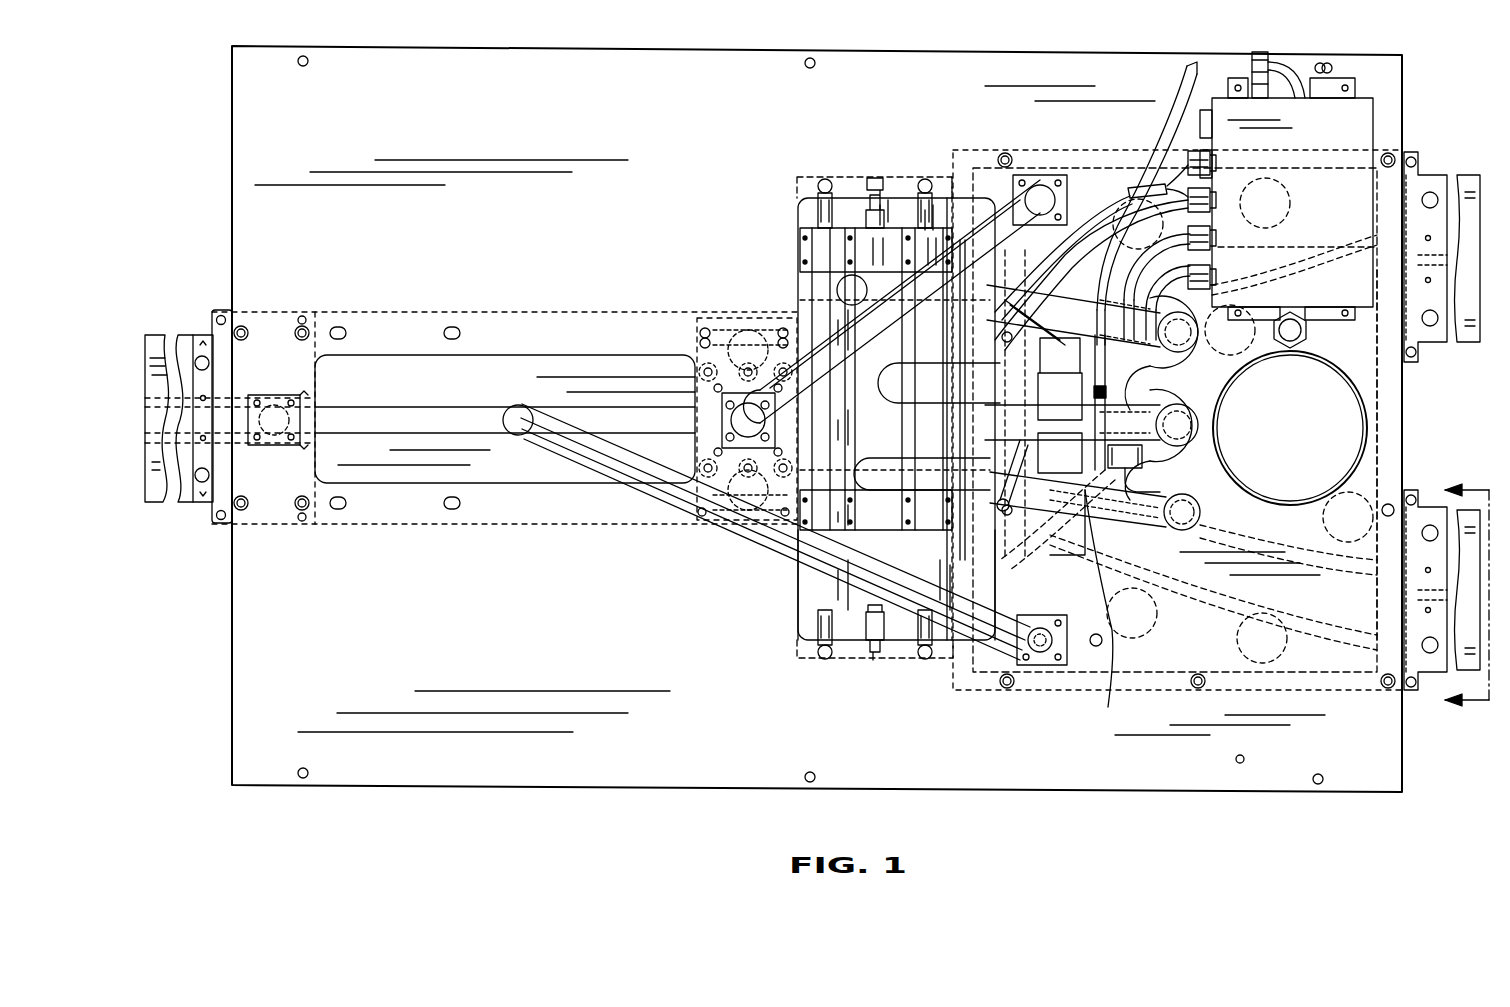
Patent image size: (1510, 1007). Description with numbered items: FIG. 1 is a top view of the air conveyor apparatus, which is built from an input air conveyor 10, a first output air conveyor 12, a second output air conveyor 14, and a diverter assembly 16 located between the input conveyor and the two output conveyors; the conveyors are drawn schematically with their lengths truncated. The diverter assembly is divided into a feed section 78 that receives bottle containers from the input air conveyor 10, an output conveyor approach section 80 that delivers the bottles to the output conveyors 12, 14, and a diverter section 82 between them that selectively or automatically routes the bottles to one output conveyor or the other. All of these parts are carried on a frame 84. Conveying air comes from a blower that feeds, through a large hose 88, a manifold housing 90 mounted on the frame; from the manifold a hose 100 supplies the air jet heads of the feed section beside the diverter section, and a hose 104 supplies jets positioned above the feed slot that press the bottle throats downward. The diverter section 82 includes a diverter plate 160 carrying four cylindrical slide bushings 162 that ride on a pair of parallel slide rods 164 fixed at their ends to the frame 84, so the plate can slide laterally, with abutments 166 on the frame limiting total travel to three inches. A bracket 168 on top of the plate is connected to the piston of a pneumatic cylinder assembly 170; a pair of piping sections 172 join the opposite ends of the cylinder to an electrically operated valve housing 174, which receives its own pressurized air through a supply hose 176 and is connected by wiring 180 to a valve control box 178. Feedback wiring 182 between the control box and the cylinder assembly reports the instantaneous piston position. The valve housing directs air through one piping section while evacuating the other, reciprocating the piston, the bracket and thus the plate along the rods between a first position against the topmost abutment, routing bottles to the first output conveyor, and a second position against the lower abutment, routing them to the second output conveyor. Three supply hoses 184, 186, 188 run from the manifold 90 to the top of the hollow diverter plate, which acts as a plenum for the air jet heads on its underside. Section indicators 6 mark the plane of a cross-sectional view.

The section line 6- 6 is at (1458, 597).
The input air conveyor 10 is at (187, 332).
The first output air conveyor 12 is at (1410, 695).
The second output air conveyor 14 is at (1422, 175).
The diverter assembly 16 is at (640, 125).
The feed section 78 is at (455, 555).
The output conveyor approach section 80 is at (1352, 705).
The diverter section 82 is at (735, 690).
The frame 84 is at (805, 175).
The large hose 88 is at (1325, 478).
The manifold housing 90 is at (1208, 388).
The hose 100 is at (1020, 395).
The hose 104 is at (855, 515).
The diverter plate 160 is at (862, 252).
The slide bushings 162 is at (898, 240).
The slide rods 164 is at (940, 232).
The abutments 166 is at (868, 223).
The bracket 168 is at (1020, 435).
The pneumatic cylinder assembly 170 is at (800, 468).
The piping sections 172 is at (947, 240).
The valve housing 174 is at (1062, 515).
The hose 176 is at (1170, 100).
The valve control box 178 is at (1348, 130).
The wiring 180 is at (1147, 228).
The feedback wiring 182 is at (1147, 165).
The supply hose 184 is at (1310, 405).
The supply hose 186 is at (1315, 428).
The supply hose 188 is at (1145, 520).